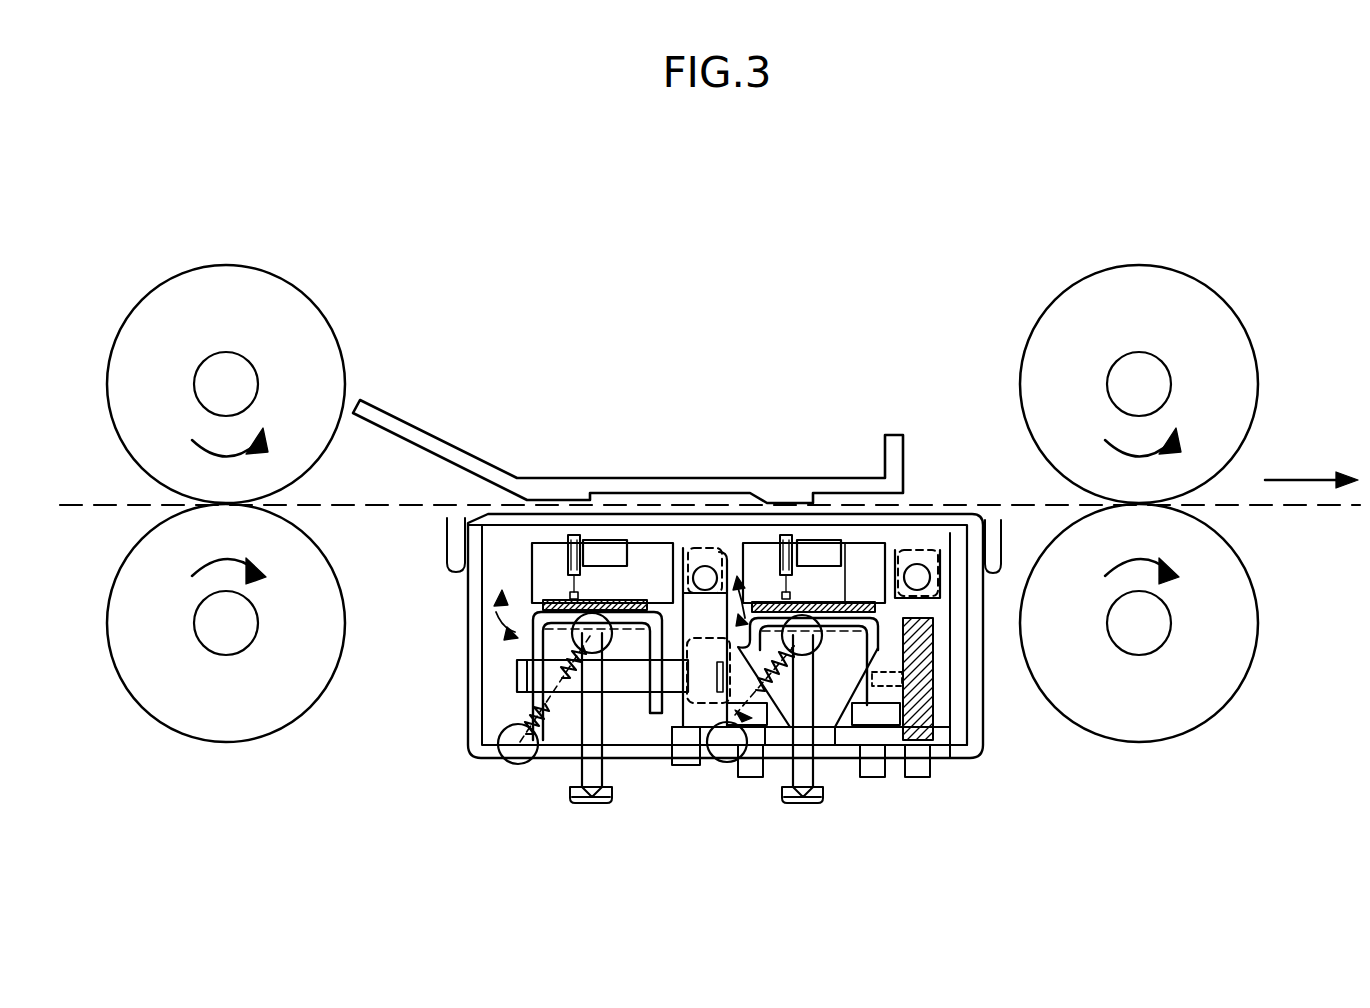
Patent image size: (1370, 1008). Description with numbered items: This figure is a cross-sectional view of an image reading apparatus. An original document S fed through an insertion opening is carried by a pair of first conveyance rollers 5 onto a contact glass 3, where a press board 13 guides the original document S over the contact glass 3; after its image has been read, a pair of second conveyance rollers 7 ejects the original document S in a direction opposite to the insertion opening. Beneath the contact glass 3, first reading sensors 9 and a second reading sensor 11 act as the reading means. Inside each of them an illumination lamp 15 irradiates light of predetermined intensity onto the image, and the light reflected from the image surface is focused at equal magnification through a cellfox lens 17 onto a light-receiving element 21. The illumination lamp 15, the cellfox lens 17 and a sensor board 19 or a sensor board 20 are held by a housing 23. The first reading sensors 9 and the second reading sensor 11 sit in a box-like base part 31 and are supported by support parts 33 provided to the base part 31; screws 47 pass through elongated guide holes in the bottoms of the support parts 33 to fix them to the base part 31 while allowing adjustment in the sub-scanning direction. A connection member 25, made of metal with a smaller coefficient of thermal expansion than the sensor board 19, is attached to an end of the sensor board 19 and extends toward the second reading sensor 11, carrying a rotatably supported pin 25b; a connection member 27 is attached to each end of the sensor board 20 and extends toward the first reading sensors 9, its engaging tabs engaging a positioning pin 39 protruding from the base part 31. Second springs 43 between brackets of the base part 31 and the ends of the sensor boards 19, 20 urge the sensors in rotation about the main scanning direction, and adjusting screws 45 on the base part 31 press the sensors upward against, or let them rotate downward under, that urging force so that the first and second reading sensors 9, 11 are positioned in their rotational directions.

The contact glass 3 is at (930, 520).
The first conveyance rollers 5 is at (210, 278).
The second conveyance rollers 7 is at (1165, 288).
The first reading sensors 9 is at (530, 577).
The second reading sensor 11 is at (872, 543).
The press board 13 is at (670, 487).
The illumination lamp 15 is at (605, 540).
The cellfox lens 17 is at (572, 535).
The sensor board 19 is at (556, 595).
The sensor board 20 is at (848, 540).
The light-receiving element 21 is at (558, 598).
The housing 23 is at (642, 543).
The connection member 25 is at (528, 638).
The pin 25b is at (672, 700).
The connection member 27 is at (852, 660).
The base part 31 is at (962, 760).
The support parts 33 is at (737, 545).
The positioning pin 39 is at (902, 680).
The second springs 43 is at (520, 712).
The adjusting screws 45 is at (592, 803).
The screws 47 is at (738, 777).
The original document S is at (1315, 510).